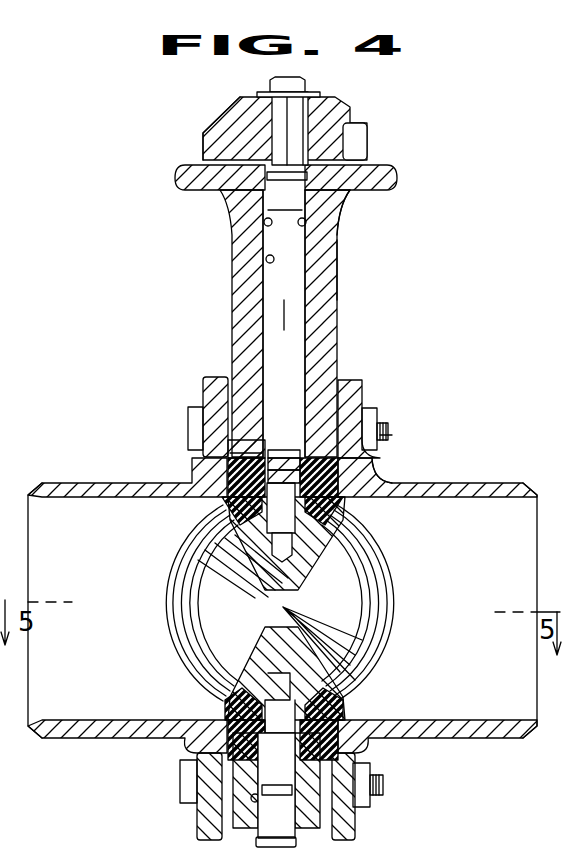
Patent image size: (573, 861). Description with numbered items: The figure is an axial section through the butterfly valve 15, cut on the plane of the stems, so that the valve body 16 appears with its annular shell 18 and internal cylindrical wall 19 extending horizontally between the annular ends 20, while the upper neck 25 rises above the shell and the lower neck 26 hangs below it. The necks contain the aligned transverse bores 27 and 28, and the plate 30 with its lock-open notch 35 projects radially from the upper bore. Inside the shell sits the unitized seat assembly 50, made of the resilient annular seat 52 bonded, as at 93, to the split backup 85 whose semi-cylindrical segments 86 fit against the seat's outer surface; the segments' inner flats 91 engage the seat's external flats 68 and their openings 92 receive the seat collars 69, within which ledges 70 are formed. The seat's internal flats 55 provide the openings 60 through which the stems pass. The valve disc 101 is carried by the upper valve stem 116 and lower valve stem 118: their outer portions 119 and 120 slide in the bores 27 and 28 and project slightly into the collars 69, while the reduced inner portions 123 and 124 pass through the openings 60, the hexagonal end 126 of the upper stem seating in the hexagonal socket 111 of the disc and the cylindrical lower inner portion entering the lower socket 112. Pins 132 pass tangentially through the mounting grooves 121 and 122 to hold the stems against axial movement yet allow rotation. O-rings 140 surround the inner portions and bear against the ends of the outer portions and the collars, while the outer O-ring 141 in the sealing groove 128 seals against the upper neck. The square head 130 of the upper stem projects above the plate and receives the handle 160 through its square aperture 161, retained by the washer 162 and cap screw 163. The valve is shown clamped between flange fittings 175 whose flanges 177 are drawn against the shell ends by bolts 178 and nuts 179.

The butterfly valve 15 is at (364, 355).
The valve body 16 is at (247, 289).
The annular shell 18 is at (233, 447).
The internal cylindrical wall 19 is at (333, 470).
The annular ends 20 is at (223, 452).
The upper neck 25 is at (340, 266).
The lower neck 26 is at (347, 830).
The upper transverse bore 27 is at (266, 260).
The lower transverse bore 28 is at (353, 770).
The plate 30 is at (178, 172).
The lock-open notch 35 is at (390, 178).
The unitized seat assembly 50 is at (340, 507).
The annular seat 52 is at (338, 715).
The internal rectangular flats 55 is at (272, 528).
The openings 60 is at (230, 498).
The external annular flats 68 is at (235, 755).
The collars 69 is at (300, 450).
The ledges 70 is at (300, 456).
The split retainer or backup 85 is at (345, 485).
The backup segments 86 is at (230, 473).
The inner flats 91 is at (300, 612).
The openings 92 is at (230, 453).
The bond 93 is at (307, 565).
The valve disc 101 is at (172, 603).
The hexagonal socket 111 is at (242, 576).
The lower socket 112 is at (262, 642).
The upper valve stem 116 is at (277, 315).
The lower valve stem 118 is at (257, 827).
The outer portion of upper stem 119 is at (293, 302).
The outer portion of lower stem 120 is at (257, 842).
The mounting groove of upper stem 121 is at (306, 221).
The mounting groove of lower stem 122 is at (277, 800).
The inner portion of upper stem 123 is at (262, 522).
The inner portion of lower stem 124 is at (265, 672).
The hexagonal end 126 is at (297, 568).
The upper annular sealing groove 128 is at (280, 178).
The square head 130 is at (302, 137).
The pins 132 is at (264, 222).
The O-rings 140 is at (265, 485).
The outer O-ring 141 is at (348, 196).
The handle 160 is at (360, 118).
The square aperture 161 is at (277, 107).
The washer 162 is at (262, 93).
The cap screw 163 is at (305, 85).
The flange fittings 175 is at (60, 669).
The flanges 177 is at (210, 380).
The bolts 178 is at (386, 425).
The nuts 179 is at (372, 410).